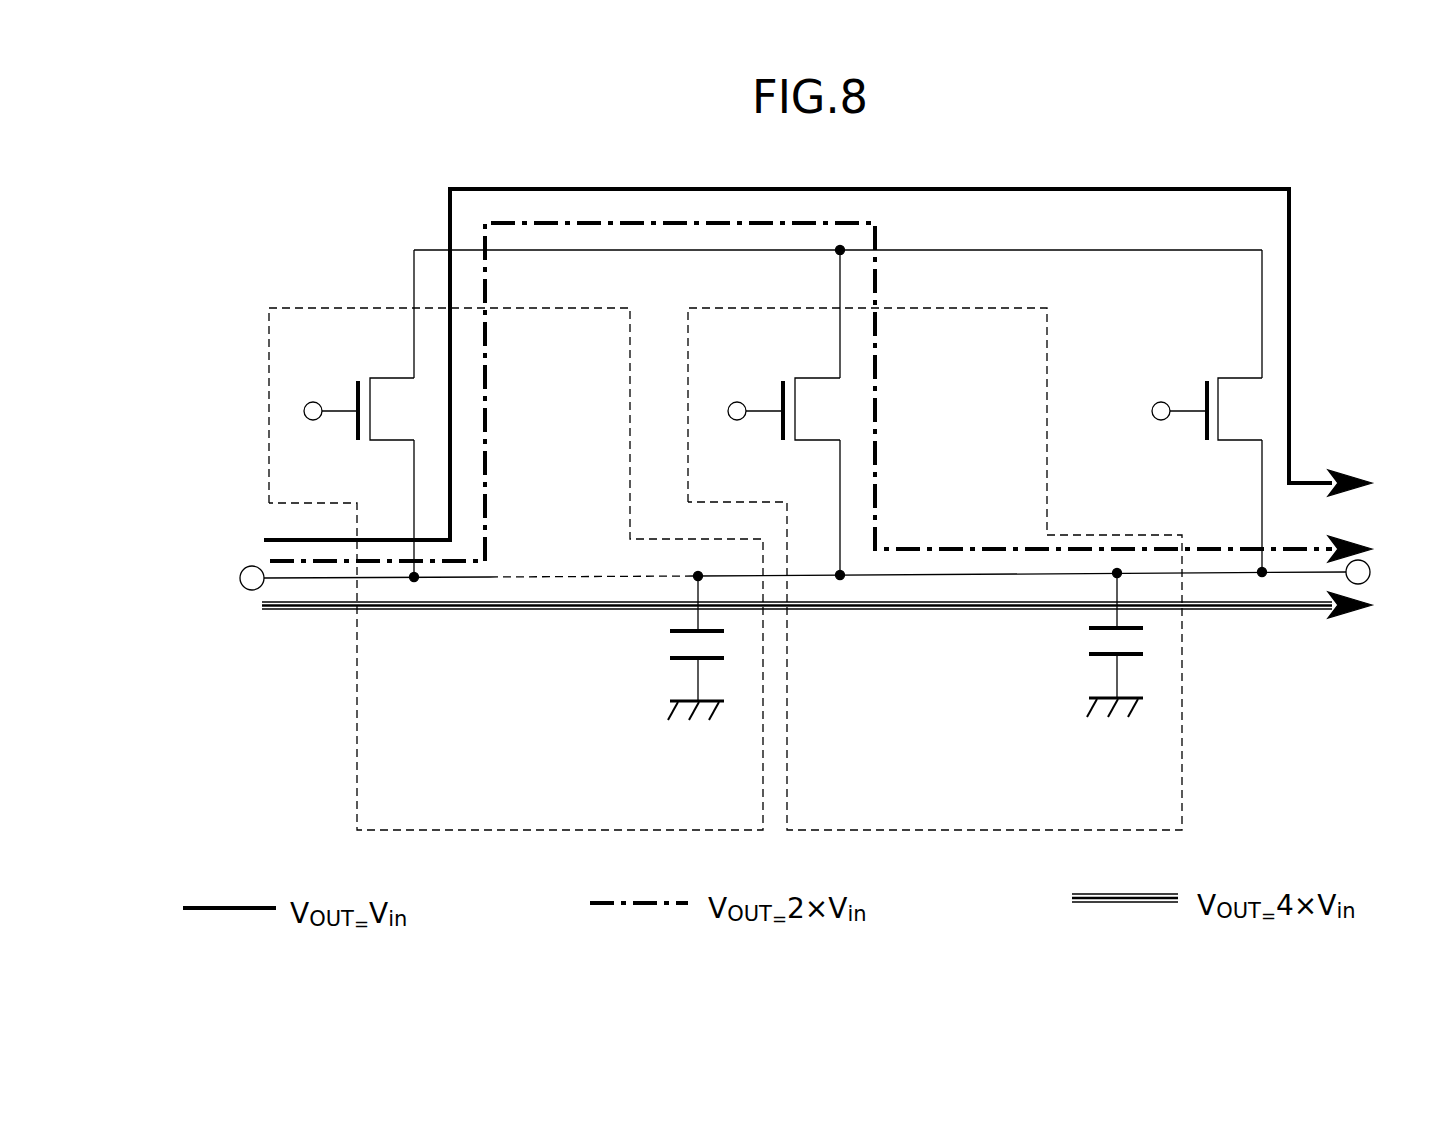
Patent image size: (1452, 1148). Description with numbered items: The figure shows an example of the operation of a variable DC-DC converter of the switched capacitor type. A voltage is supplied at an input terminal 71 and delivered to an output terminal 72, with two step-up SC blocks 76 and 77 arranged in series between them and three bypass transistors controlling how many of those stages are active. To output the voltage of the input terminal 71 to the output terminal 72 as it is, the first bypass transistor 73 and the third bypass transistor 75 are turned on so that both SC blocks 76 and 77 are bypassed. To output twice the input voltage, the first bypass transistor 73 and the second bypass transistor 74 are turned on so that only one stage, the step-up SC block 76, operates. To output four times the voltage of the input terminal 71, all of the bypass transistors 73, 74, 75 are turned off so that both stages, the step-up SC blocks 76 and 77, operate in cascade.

The input terminal 71 is at (252, 591).
The output terminal 72 is at (1368, 582).
The bypass transistor (S1) 73 is at (393, 378).
The bypass transistor (S2) 74 is at (808, 378).
The bypass transistor (S3) 75 is at (1262, 372).
The step-up SC block 76 is at (356, 765).
The step-up SC block 77 is at (1184, 733).